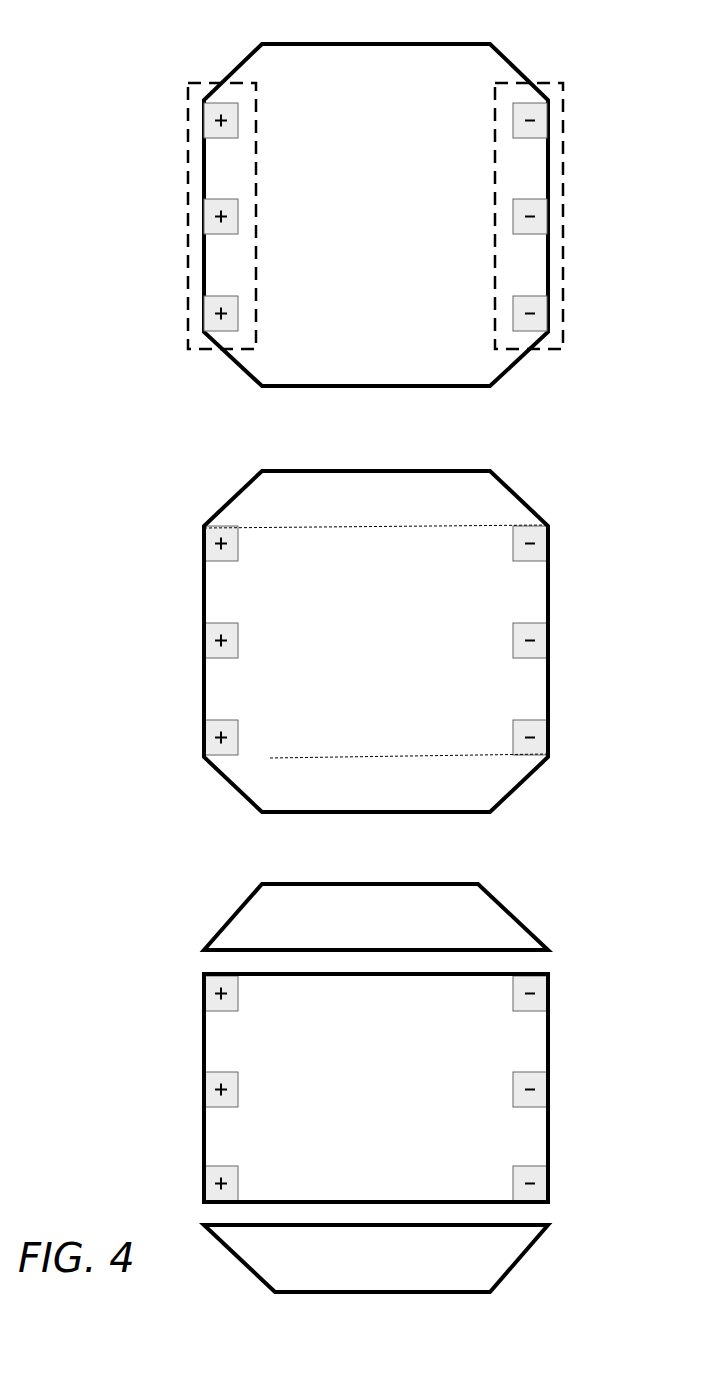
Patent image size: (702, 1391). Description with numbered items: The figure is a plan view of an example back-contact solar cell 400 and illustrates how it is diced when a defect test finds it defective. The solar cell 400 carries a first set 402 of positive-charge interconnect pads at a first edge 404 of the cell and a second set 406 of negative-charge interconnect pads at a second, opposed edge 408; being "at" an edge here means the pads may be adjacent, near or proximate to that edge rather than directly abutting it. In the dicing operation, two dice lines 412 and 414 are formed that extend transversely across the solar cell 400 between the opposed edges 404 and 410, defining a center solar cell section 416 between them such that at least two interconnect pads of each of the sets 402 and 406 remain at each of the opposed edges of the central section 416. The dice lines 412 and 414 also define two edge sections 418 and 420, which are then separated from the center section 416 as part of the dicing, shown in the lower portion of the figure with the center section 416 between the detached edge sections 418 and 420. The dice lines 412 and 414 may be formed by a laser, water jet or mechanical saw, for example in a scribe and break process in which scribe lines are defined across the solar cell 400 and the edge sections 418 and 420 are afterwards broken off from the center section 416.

The back-contact solar cell 400 is at (94, 71).
The first set of positive-charge interconnect pads 402 is at (188, 325).
The first edge 404 is at (204, 158).
The second set of negative-charge interconnect pads 406 is at (563, 215).
The second edge 408 is at (548, 163).
The opposed edge 410 is at (548, 590).
The dice line 412 is at (485, 526).
The dice line 414 is at (460, 755).
The center solar cell section 416 is at (396, 659).
The edge section 418 is at (398, 513).
The edge section 420 is at (396, 786).